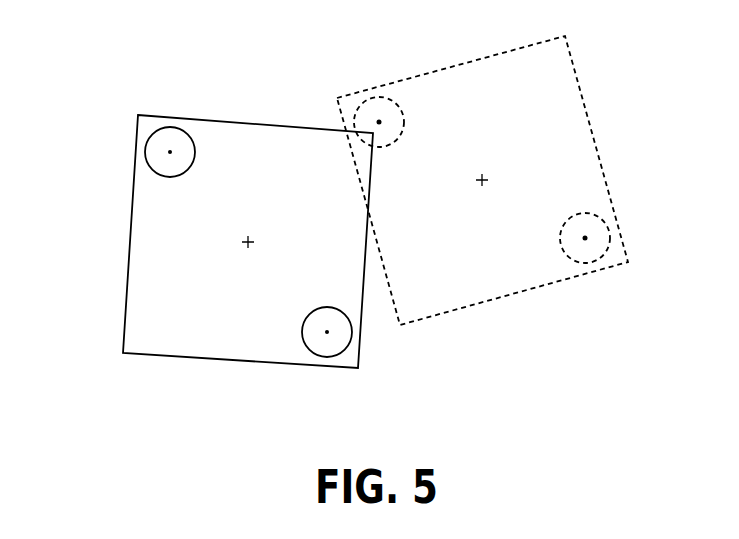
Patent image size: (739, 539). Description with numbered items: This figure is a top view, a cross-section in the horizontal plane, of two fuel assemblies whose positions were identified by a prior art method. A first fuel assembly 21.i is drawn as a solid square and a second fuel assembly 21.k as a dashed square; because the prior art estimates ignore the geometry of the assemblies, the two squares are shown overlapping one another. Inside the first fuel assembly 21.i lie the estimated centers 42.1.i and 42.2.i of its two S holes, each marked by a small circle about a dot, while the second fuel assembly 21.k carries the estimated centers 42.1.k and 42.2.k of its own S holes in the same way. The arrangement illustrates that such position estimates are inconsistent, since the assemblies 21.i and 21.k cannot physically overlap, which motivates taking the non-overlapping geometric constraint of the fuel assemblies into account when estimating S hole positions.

The first fuel assembly 21.i is at (133, 187).
The center of S hole of first fuel assembly 42.1.i is at (327, 332).
The center of S hole of first fuel assembly 42.2.i is at (170, 152).
The second fuel assembly 21.k is at (578, 78).
The center of S hole of second fuel assembly 42.1.k is at (585, 238).
The center of S hole of second fuel assembly 42.2.k is at (379, 122).